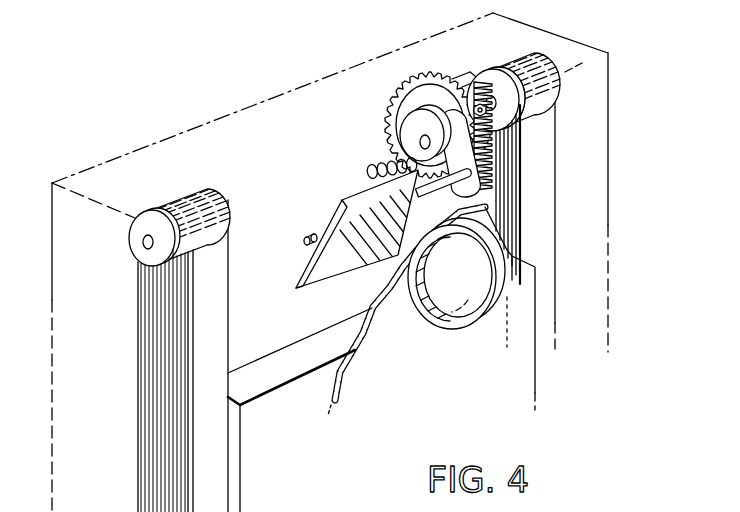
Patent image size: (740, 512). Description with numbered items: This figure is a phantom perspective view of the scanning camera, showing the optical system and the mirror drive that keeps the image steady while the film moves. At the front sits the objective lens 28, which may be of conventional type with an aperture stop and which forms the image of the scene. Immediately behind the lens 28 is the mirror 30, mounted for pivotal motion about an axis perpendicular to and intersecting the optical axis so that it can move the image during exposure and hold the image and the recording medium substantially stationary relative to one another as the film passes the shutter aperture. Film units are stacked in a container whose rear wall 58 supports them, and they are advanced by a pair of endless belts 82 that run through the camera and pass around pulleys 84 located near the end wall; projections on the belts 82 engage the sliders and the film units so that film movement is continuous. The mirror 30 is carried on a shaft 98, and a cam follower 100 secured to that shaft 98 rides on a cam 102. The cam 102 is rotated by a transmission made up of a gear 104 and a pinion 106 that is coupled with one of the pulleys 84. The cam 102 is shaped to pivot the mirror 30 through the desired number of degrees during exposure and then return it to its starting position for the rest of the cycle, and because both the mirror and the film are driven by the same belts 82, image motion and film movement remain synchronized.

The objective lens 28 is at (462, 298).
The mirror 30 is at (337, 267).
The rear wall 58 is at (268, 431).
The endless belts 82 is at (200, 352).
The pulleys 84 is at (490, 87).
The shaft 98 is at (311, 235).
The cam follower 100 is at (493, 192).
The cam 102 is at (410, 123).
The gear 104 is at (433, 88).
The pinion 106 is at (483, 107).